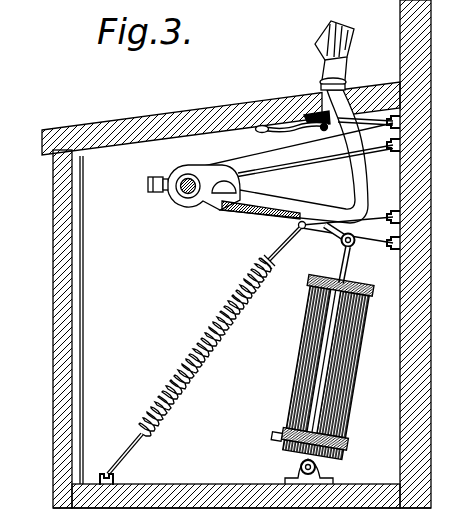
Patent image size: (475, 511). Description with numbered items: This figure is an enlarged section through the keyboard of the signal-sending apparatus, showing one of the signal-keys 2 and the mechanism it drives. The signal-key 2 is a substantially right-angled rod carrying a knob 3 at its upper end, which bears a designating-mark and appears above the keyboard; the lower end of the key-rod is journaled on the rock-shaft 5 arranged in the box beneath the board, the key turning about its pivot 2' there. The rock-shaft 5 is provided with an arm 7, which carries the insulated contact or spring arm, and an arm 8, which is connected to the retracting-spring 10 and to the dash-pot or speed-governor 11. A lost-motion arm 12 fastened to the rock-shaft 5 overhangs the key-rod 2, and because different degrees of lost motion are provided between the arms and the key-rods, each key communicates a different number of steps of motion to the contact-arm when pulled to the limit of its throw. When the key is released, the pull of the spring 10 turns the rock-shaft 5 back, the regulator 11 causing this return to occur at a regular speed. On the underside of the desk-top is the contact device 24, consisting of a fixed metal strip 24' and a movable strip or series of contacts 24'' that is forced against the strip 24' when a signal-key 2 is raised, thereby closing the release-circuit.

The signal-key 2 is at (302, 169).
The pivot pin 2' is at (188, 203).
The knob 3 is at (352, 42).
The rock-shaft 5 is at (182, 191).
The arm 7 is at (197, 117).
The arm 8 is at (328, 233).
The retracting-spring 10 is at (207, 361).
The dash-pot or speed-governor 11 is at (296, 374).
The lost-motion arm 12 is at (219, 167).
The contact device 24 is at (307, 149).
The metal strip 24' is at (309, 96).
The movable strip or series of contacts 24'' is at (287, 155).